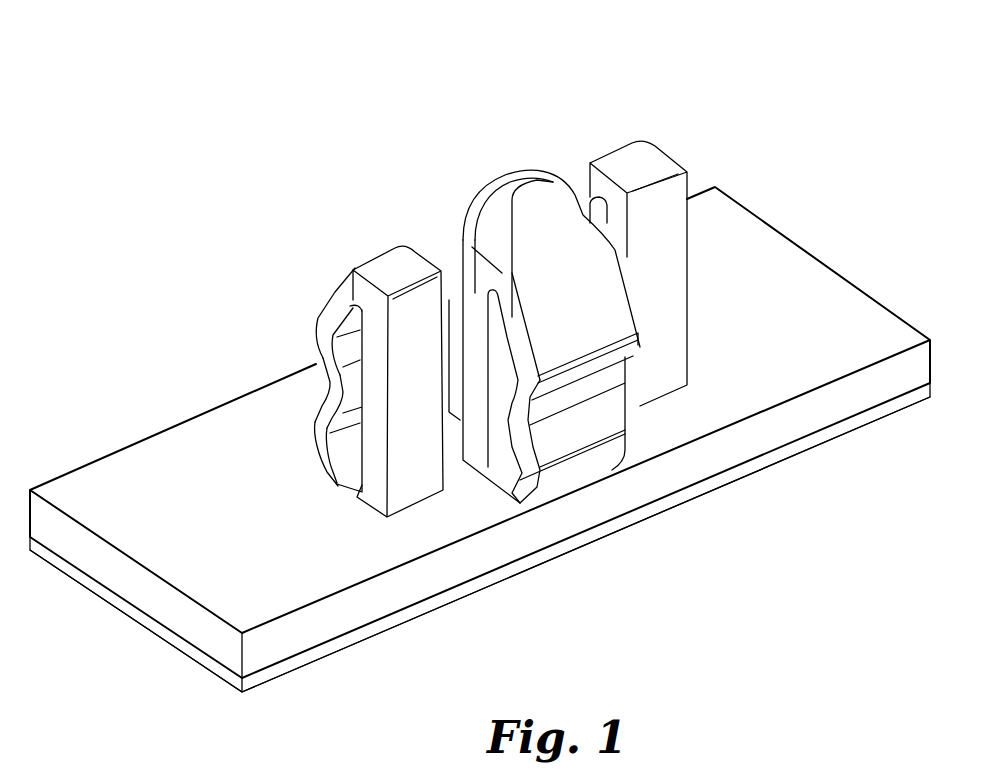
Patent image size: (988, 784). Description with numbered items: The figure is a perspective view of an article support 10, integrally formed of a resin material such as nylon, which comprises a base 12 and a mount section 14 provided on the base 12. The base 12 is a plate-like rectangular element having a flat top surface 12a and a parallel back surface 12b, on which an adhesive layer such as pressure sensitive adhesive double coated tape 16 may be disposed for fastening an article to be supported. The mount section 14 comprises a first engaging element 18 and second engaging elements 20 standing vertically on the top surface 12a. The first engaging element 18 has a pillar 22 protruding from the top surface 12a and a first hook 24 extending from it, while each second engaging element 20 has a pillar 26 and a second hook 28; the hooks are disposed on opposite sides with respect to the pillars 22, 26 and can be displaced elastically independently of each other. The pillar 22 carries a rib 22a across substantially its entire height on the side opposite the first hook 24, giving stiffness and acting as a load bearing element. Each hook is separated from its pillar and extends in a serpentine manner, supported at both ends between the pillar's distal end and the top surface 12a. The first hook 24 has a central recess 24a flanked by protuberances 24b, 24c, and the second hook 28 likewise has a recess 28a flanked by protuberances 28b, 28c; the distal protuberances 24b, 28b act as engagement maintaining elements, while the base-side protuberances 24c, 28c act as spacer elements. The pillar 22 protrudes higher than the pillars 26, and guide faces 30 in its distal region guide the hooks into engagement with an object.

The article support 10 is at (368, 118).
The base 12 is at (172, 416).
The top surface 12a is at (167, 557).
The back surface 12b is at (305, 652).
The mount section 14 is at (545, 126).
The pressure sensitive adhesive double coated tape 16 is at (203, 668).
The first engaging element 18 is at (500, 158).
The second engaging element 20 is at (350, 259).
The pillar 22 is at (453, 283).
The rib 22a is at (449, 297).
The first hook 24 is at (622, 415).
The recess 24a is at (574, 395).
The protuberance 24b is at (640, 347).
The protuberance 24c is at (565, 462).
The pillar 26 is at (415, 435).
The second hook 28 is at (327, 313).
The recess 28a is at (327, 383).
The protuberance 28b is at (315, 328).
The protuberance 28c is at (316, 430).
The guide faces 30 is at (452, 268).